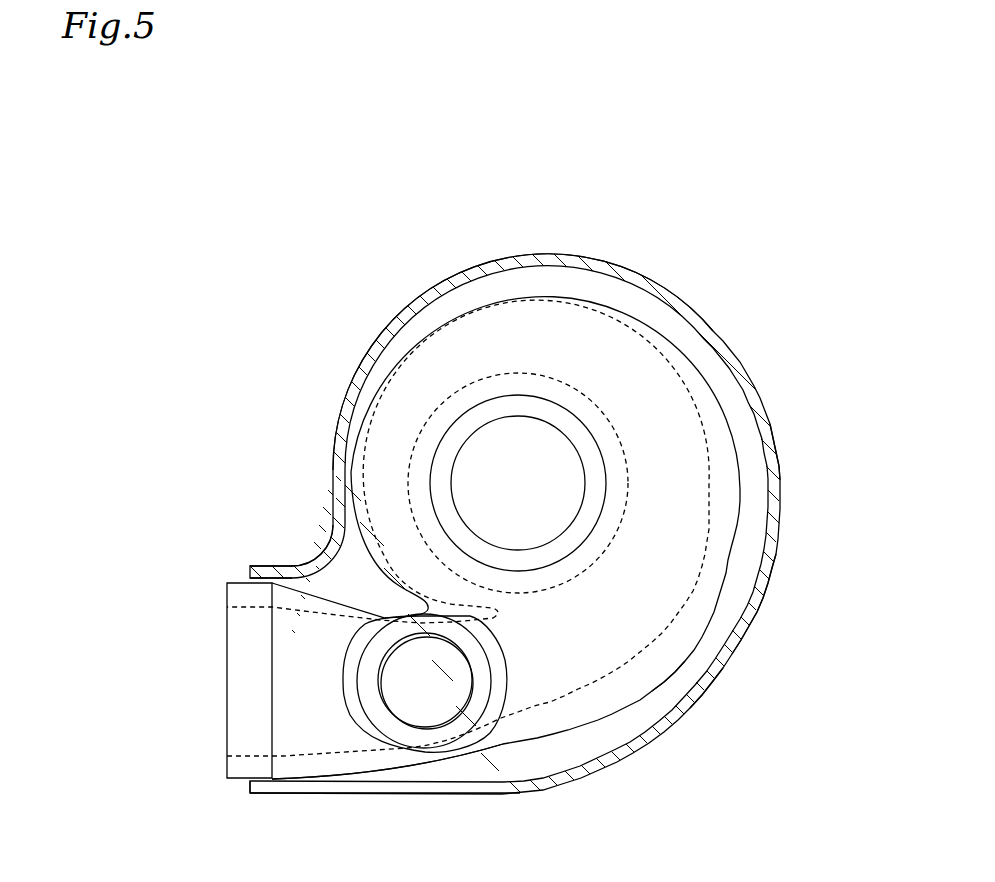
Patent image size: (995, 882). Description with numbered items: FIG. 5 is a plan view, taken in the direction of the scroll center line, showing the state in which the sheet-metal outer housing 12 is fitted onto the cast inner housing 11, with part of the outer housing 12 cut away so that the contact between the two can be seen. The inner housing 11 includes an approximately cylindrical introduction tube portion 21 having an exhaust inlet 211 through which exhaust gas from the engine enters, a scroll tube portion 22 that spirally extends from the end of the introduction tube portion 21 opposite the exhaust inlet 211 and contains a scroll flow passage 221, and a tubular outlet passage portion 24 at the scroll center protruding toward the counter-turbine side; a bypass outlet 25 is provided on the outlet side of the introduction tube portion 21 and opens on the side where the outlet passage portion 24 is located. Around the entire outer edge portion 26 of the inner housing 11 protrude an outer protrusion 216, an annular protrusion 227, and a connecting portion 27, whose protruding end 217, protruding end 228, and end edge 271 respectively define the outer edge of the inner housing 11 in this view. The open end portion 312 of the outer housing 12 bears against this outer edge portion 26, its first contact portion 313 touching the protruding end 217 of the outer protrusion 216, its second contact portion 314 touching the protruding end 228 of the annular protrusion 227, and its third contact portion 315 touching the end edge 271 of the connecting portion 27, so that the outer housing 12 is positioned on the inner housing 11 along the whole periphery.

The inner housing 11 is at (733, 380).
The outer housing 12 is at (608, 265).
The introduction tube portion 21 is at (297, 710).
The scroll tube portion 22 is at (442, 347).
The outlet passage portion 24 is at (560, 403).
The bypass outlet 25 is at (386, 662).
The outer edge portion 26 is at (767, 582).
The connecting portion 27 is at (363, 548).
The exhaust inlet 211 is at (279, 796).
The outer protrusion 216 is at (392, 770).
The protruding end 217 is at (460, 795).
The scroll flow passage 221 is at (497, 310).
The annular protrusion 227 is at (628, 733).
The protruding end 228 is at (707, 700).
The end edge 271 is at (327, 545).
The open end portion 312 is at (775, 455).
The first contact portion 313 is at (338, 797).
The second contact portion 314 is at (747, 637).
The third contact portion 315 is at (262, 566).